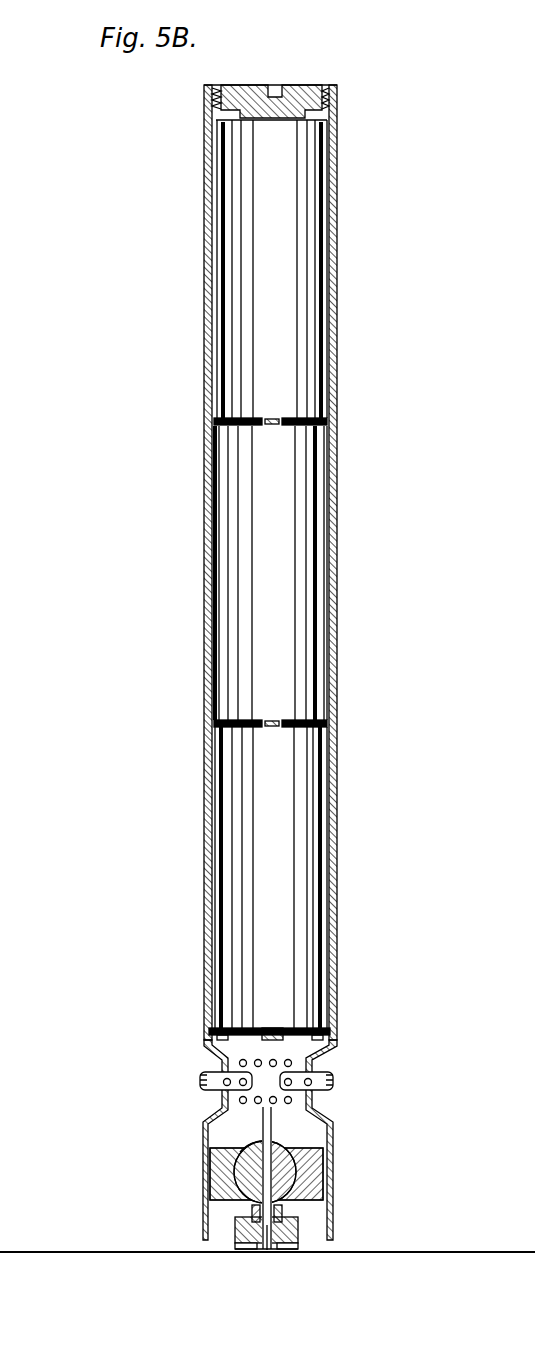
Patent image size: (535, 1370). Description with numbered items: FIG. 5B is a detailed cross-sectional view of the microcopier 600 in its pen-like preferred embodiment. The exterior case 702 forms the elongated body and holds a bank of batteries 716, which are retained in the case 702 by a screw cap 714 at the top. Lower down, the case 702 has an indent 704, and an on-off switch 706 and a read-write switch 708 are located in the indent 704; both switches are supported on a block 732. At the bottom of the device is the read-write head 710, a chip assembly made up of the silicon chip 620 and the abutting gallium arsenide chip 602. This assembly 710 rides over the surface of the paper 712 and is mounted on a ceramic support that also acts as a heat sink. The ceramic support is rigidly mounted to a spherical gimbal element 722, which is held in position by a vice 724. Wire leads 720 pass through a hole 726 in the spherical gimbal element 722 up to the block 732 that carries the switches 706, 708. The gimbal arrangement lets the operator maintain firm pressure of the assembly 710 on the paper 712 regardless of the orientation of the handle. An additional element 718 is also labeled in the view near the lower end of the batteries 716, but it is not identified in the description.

The microcopier 600 is at (369, 554).
The exterior case 702 is at (336, 324).
The screw cap 714 is at (304, 86).
The bank of batteries 716 is at (290, 273).
The connector pin 718 is at (273, 1106).
The indent 704 is at (318, 1043).
The block 732 is at (291, 1060).
The on-off switch 706 is at (205, 1092).
The read-write switch 708 is at (330, 1093).
The vice 724 is at (316, 1182).
The spherical gimbal element 722 is at (289, 1145).
The hole 726 is at (259, 1143).
The wire leads 720 is at (273, 1119).
The gallium arsenide chip 602 is at (245, 1247).
The silicon chip 620 is at (280, 1250).
The read-write head 710 is at (306, 1244).
The paper 712 is at (42, 1251).